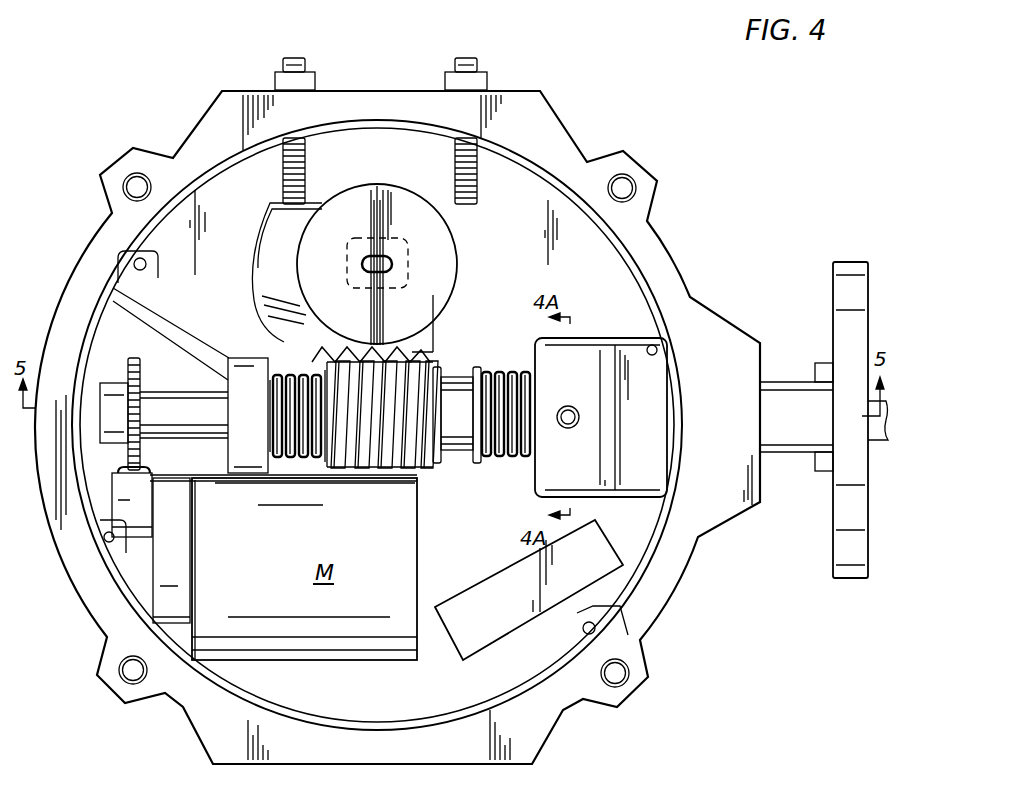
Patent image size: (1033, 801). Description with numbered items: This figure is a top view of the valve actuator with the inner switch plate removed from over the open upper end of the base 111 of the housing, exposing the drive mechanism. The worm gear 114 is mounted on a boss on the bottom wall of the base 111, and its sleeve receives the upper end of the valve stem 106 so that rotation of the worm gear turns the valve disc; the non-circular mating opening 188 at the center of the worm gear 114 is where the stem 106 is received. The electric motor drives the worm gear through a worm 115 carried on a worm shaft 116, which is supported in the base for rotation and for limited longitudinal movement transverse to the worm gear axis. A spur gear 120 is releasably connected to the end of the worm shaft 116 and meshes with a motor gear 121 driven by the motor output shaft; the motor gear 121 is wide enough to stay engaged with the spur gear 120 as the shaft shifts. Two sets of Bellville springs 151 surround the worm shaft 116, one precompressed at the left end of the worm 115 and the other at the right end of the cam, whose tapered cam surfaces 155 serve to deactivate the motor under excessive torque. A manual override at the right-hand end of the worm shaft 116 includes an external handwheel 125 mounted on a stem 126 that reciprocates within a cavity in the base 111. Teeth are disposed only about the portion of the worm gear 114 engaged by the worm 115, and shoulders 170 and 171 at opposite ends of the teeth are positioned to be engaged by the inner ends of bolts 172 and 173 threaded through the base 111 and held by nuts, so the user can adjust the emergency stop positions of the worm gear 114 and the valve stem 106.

The base 111 is at (668, 238).
The bolt 172 is at (292, 60).
The bolt 173 is at (468, 60).
The shoulder 170 is at (275, 207).
The slot 188 is at (362, 266).
The stem 106 is at (408, 256).
The worm gear 114 is at (454, 300).
The shoulder 171 is at (436, 330).
The tapered cam surfaces 155 is at (454, 378).
The Bellville springs 151 is at (298, 460).
The worm 115 is at (381, 466).
The spur gear 120 is at (133, 357).
The worm shaft 116 is at (185, 392).
The motor gear 121 is at (148, 468).
The handwheel 125 is at (833, 288).
The stem 126 is at (792, 454).